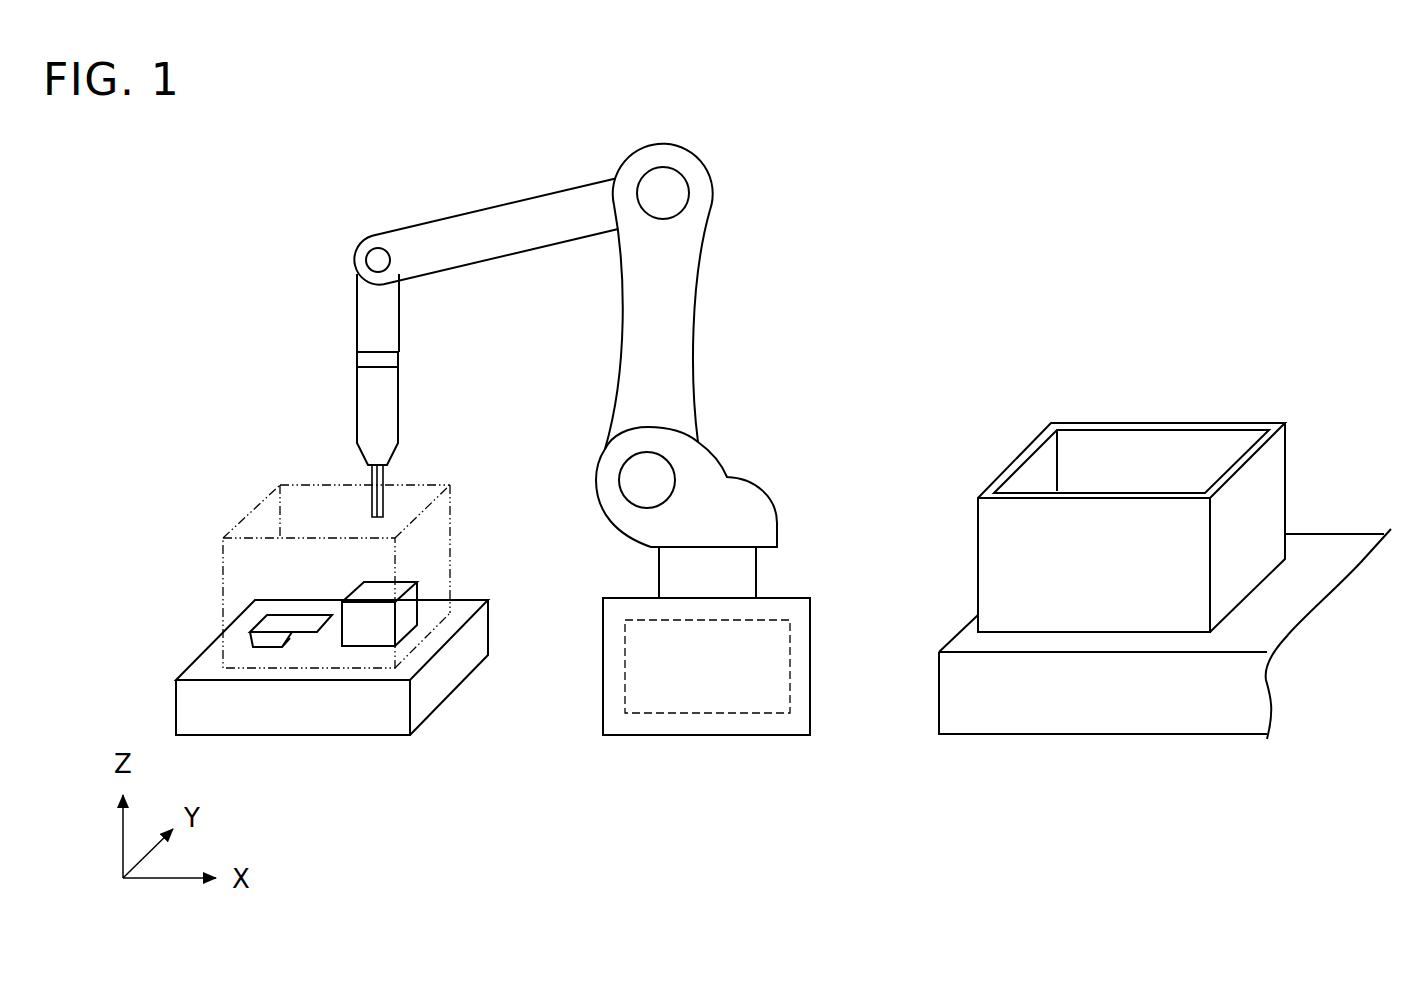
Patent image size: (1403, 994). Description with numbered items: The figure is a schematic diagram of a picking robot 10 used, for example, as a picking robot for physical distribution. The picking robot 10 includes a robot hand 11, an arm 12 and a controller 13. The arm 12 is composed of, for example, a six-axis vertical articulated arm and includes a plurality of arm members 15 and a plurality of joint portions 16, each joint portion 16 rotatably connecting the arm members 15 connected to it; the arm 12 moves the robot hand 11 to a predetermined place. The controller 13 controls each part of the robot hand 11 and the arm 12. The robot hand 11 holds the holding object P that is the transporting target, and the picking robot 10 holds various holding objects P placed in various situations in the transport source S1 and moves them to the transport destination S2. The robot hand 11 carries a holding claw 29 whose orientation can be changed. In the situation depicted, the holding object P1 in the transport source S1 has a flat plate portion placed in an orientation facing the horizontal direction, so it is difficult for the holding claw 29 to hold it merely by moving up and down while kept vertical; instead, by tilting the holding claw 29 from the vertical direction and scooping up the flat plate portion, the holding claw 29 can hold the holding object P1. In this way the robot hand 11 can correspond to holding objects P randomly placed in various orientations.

The picking robot 10 is at (441, 159).
The arm 12 is at (588, 146).
The arm members 15 is at (518, 215).
The joint portions 16 is at (378, 258).
The robot hand 11 is at (352, 431).
The holding claw 29 is at (382, 503).
The controller 13 is at (717, 713).
The transport source S1 is at (268, 493).
The transport destination S2 is at (1183, 423).
The holding object P is at (385, 593).
The holding object P1 is at (307, 623).